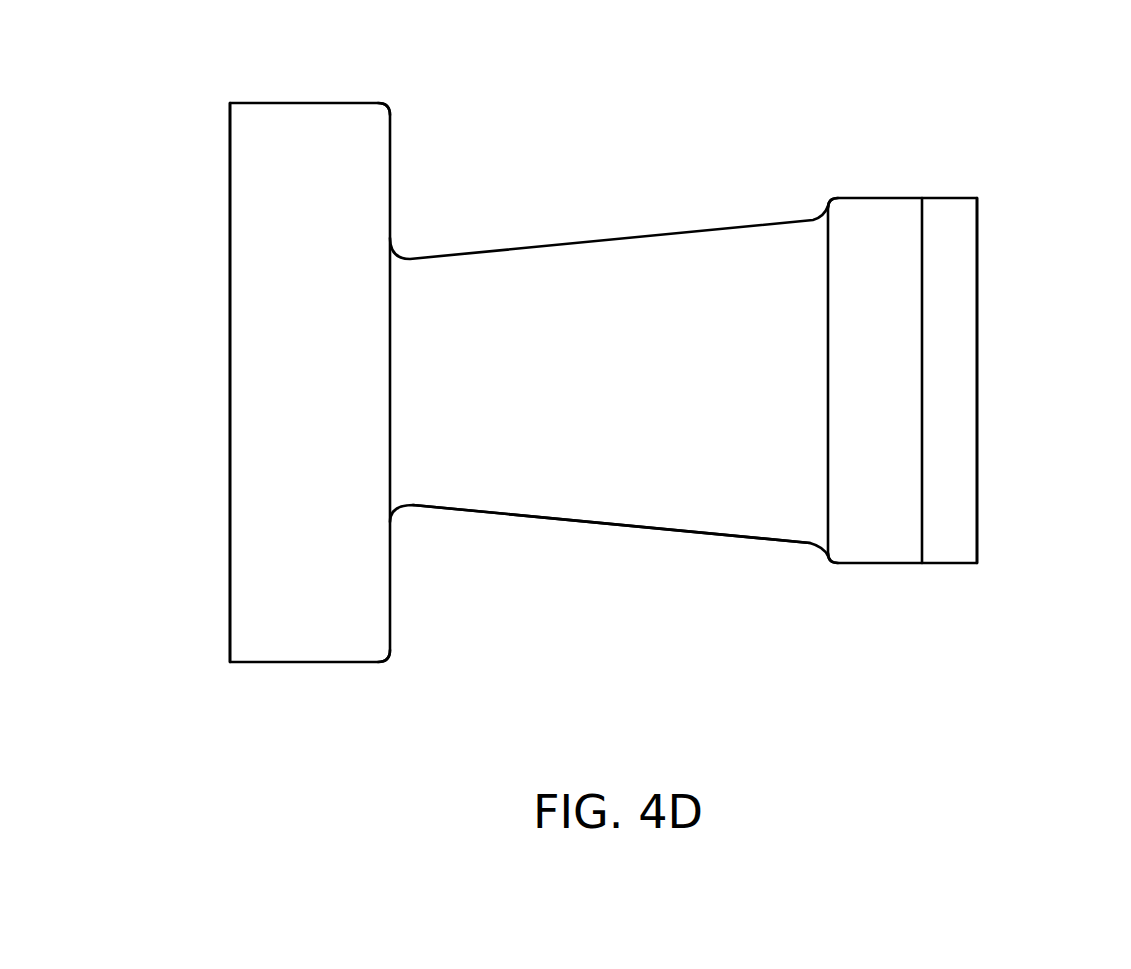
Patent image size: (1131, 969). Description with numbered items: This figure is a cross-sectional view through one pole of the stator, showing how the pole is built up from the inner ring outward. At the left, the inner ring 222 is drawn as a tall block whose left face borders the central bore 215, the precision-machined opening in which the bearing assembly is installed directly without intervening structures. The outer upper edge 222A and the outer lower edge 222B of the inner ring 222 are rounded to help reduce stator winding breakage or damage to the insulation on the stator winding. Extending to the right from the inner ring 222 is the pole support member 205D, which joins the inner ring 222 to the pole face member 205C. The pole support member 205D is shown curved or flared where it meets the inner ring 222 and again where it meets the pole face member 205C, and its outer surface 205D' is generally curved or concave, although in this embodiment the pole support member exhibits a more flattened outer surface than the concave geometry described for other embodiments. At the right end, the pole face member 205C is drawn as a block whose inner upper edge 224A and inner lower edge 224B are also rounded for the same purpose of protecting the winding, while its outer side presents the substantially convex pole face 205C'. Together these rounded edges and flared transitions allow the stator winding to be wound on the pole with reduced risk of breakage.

The central bore 215 is at (230, 354).
The inner ring 222 is at (312, 122).
The outer upper edge 222A is at (390, 108).
The outer lower edge 222B is at (390, 655).
The inner upper edge 224A is at (830, 200).
The inner lower edge 224B is at (830, 562).
The pole face member 205C is at (902, 336).
The pole face 205C' is at (1038, 380).
The pole support member 205D is at (609, 411).
The outer surface of pole support member 205D' is at (611, 560).